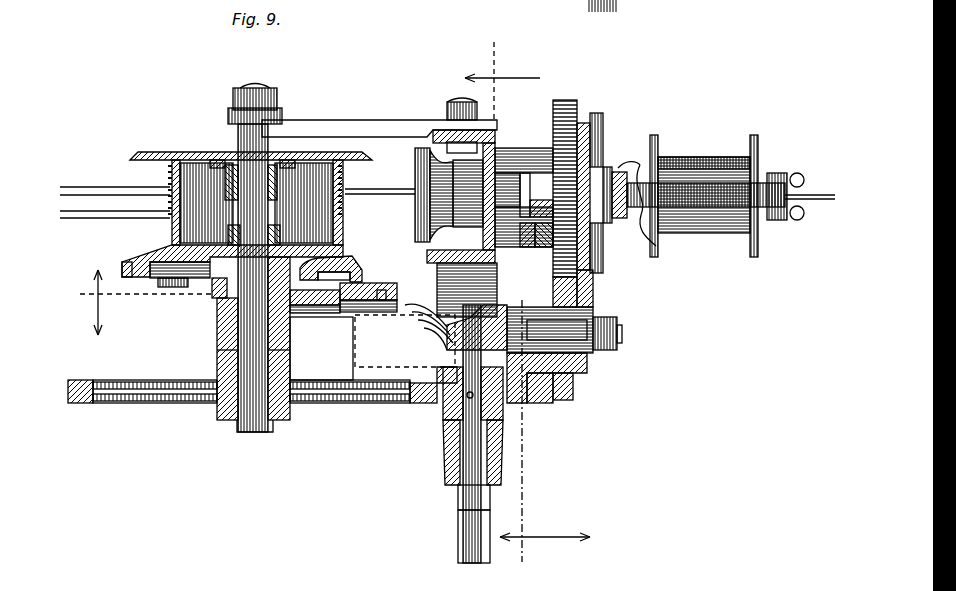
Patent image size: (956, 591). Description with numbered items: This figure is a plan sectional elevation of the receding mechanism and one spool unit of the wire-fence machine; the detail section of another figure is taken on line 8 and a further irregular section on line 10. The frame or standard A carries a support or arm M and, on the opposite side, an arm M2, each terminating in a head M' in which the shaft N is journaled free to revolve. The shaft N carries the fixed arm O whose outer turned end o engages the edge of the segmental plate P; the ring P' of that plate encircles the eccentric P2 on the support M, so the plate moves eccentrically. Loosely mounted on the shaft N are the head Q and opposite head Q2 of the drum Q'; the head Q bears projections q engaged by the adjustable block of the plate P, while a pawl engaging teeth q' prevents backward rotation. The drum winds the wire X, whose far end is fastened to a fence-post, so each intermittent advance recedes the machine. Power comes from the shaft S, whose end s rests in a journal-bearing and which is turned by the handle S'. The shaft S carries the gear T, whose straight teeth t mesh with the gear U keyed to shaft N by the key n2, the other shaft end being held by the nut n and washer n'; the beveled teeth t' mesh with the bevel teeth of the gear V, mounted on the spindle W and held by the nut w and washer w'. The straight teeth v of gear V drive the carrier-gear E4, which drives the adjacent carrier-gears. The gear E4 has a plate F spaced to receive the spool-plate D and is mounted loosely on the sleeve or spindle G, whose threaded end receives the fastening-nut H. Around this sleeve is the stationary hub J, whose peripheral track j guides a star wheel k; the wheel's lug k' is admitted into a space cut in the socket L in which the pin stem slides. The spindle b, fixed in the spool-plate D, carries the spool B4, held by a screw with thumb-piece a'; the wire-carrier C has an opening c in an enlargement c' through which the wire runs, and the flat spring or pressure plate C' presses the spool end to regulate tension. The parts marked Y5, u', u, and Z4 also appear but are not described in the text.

The section line 8 is at (527, 314).
The irregular section line 10 is at (136, 302).
The nut n is at (241, 97).
The washer n' is at (267, 108).
The key n2 is at (263, 288).
The arm M2 is at (379, 123).
The frame or standard A is at (487, 135).
The fastening-nut H is at (415, 160).
The drum head Q2 is at (157, 152).
The drum Q' is at (230, 202).
The head M' is at (326, 250).
The rod Y5 is at (95, 175).
The wire X is at (85, 244).
The drum head Q is at (232, 253).
The teeth q' is at (119, 261).
The ring P' is at (180, 297).
The projections q is at (159, 297).
The eccentric P2 is at (219, 292).
The shaft N is at (240, 327).
The arm O is at (340, 268).
The outer turned end o is at (348, 260).
The segmental plate P is at (351, 286).
The support or arm M is at (404, 289).
The hub u' is at (483, 290).
The handle S' is at (452, 327).
The shaft end s is at (463, 346).
The gear T is at (505, 440).
The shaft S is at (461, 524).
The beveled teeth or leaves t' is at (422, 361).
The gear U is at (370, 405).
The straight teeth or leaves t is at (500, 406).
The gear V is at (545, 403).
The straight teeth or leaves v is at (567, 401).
The spindle W is at (577, 330).
The washer w' is at (582, 315).
The nut w is at (621, 335).
The washer u is at (641, 339).
The head or hub J is at (516, 150).
The track or face j is at (507, 190).
The socket L is at (526, 175).
The star wheel k is at (525, 249).
The lug, cam, or projection k' is at (544, 249).
The gear E4 is at (565, 100).
The spool-plate D is at (586, 123).
The plate F is at (601, 130).
The sleeve or spindle G is at (612, 165).
The flat spring or pressure plate C' is at (637, 192).
The spindle b is at (619, 194).
The spool B4 is at (704, 190).
The wire-carrier C is at (706, 210).
The opening or passage c is at (778, 179).
The enlargement c' is at (805, 164).
The thumb-piece a' is at (796, 225).
The pin Z4 is at (814, 185).